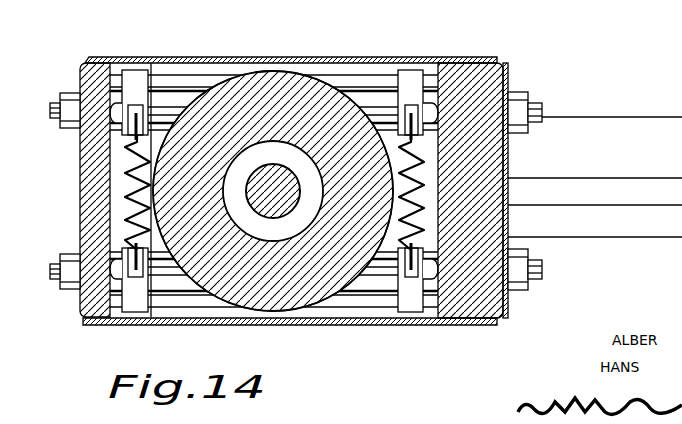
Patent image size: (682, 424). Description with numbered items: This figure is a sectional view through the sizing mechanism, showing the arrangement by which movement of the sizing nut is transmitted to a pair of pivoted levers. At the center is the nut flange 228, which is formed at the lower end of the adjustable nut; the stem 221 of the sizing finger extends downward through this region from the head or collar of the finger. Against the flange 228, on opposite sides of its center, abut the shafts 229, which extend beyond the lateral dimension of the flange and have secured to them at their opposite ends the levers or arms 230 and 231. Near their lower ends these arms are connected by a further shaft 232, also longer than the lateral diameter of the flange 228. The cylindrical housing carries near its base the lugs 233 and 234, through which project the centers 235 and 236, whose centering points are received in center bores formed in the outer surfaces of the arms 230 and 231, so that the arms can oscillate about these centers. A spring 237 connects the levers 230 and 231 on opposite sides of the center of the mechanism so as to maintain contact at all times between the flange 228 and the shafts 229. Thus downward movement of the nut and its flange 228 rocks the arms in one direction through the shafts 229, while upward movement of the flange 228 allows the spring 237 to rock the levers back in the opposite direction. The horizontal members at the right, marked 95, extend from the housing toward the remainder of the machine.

The shaft 95 is at (600, 193).
The stem 221 is at (287, 157).
The flange 228 is at (302, 83).
The shafts 229 is at (208, 82).
The lever or arm 230 is at (127, 72).
The lever or arm 231 is at (408, 77).
The shaft 232 is at (160, 113).
The lug 233 is at (85, 77).
The lug 234 is at (485, 165).
The center 235 is at (53, 123).
The center 236 is at (537, 107).
The spring 237 is at (125, 190).